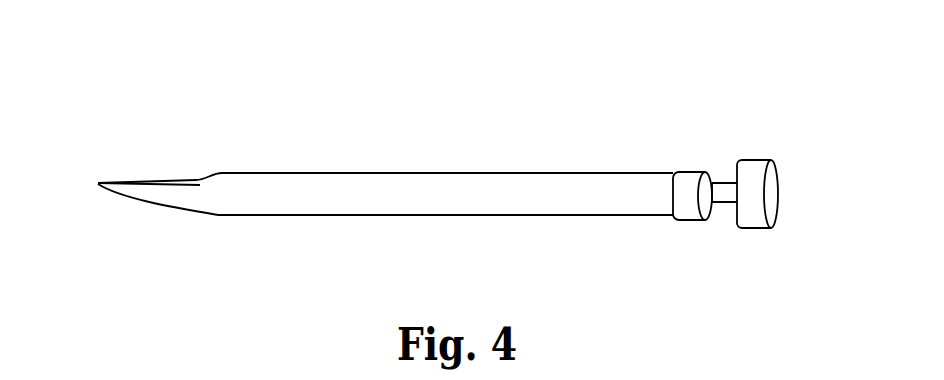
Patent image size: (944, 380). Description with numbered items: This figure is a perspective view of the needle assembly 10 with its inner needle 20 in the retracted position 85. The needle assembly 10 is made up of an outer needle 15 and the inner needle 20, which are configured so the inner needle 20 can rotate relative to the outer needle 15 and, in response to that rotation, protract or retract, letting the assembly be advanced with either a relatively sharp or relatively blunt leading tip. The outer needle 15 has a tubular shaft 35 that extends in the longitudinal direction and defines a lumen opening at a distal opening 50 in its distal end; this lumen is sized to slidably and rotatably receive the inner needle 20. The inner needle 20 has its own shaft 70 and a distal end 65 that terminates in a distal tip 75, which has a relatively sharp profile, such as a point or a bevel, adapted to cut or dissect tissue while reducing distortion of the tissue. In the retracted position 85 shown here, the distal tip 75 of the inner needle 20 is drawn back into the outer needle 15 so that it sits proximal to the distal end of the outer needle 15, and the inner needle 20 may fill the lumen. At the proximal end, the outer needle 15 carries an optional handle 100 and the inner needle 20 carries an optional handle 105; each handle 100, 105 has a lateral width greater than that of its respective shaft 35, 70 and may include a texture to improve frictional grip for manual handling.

The needle assembly 10 is at (417, 161).
The outer needle 15 is at (612, 148).
The inner needle 20 is at (762, 195).
The shaft 35 is at (469, 172).
The distal opening 50 is at (173, 186).
The distal end 65 is at (158, 180).
The shaft 70 is at (728, 183).
The distal tip 75 is at (98, 182).
The retracted position 85 is at (150, 160).
The handle 100 is at (683, 220).
The handle 105 is at (758, 229).